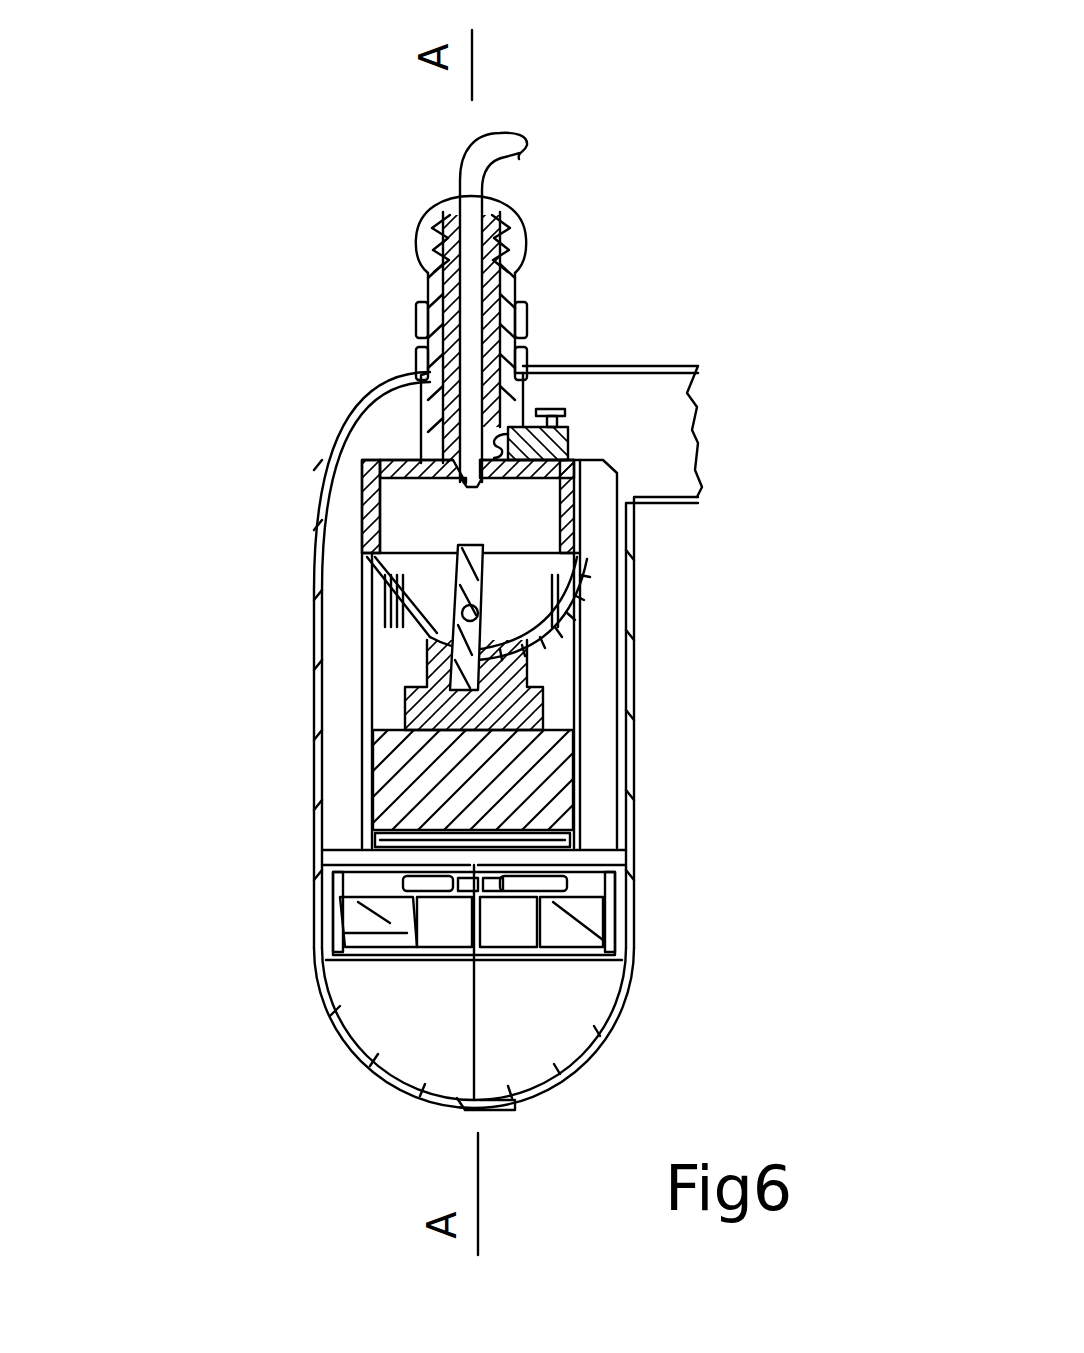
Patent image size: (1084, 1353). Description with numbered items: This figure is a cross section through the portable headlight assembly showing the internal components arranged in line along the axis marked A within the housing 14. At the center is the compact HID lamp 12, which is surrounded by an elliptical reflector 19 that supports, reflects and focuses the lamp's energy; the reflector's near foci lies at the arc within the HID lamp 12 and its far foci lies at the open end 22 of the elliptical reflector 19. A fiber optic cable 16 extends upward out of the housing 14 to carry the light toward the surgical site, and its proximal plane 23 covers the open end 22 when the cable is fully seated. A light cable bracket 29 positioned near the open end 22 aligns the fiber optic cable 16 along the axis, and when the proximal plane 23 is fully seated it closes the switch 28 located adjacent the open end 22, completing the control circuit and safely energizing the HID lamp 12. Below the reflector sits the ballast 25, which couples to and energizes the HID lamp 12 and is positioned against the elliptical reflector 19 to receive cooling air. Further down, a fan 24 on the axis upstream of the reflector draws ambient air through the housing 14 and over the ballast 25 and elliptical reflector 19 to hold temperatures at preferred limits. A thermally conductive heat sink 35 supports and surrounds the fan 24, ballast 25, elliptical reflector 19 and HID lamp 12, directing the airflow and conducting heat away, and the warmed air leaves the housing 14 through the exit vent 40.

The HID lamp 12 is at (482, 622).
The housing 14 is at (617, 1043).
The fiber optic cable 16 is at (510, 163).
The elliptical reflector 19 is at (400, 617).
The open end 22 is at (580, 550).
The proximal plane 23 is at (462, 505).
The fan 24 is at (593, 917).
The ballast 25 is at (553, 790).
The switch 28 is at (570, 430).
The light cable bracket 29 is at (425, 372).
The heat sink 35 is at (340, 798).
The exit vent 40 is at (695, 368).